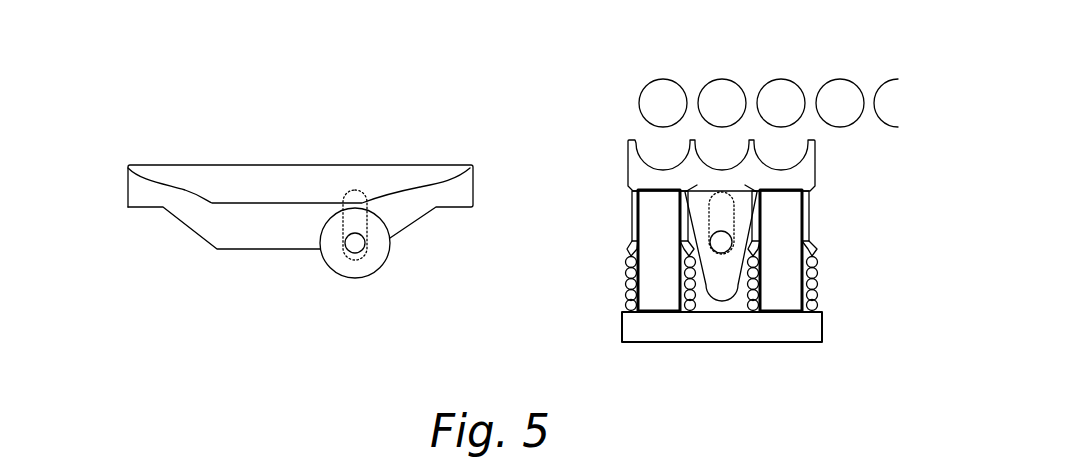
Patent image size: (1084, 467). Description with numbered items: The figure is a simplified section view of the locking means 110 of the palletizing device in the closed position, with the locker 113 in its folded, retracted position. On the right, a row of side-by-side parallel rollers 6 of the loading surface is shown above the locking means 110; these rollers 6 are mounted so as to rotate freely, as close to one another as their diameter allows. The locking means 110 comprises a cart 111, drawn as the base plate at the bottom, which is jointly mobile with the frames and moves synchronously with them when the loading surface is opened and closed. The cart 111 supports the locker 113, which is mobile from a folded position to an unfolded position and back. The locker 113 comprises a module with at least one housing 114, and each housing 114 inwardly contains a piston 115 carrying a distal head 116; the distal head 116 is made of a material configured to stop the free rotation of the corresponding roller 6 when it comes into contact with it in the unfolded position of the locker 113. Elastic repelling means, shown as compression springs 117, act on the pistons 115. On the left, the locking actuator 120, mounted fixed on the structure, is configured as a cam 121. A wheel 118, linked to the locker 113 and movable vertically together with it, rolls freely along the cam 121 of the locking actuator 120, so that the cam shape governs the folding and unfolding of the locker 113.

The locking actuator 120 is at (275, 146).
The cam 121 is at (223, 184).
The wheel 118 is at (336, 260).
The rollers 6 is at (782, 97).
The locker 113 is at (626, 126).
The housing 114 is at (620, 216).
The locking means 110 is at (726, 352).
The piston 115 is at (628, 253).
The compression spring 117 is at (817, 285).
The distal head 116 is at (722, 167).
The cart 111 is at (816, 328).